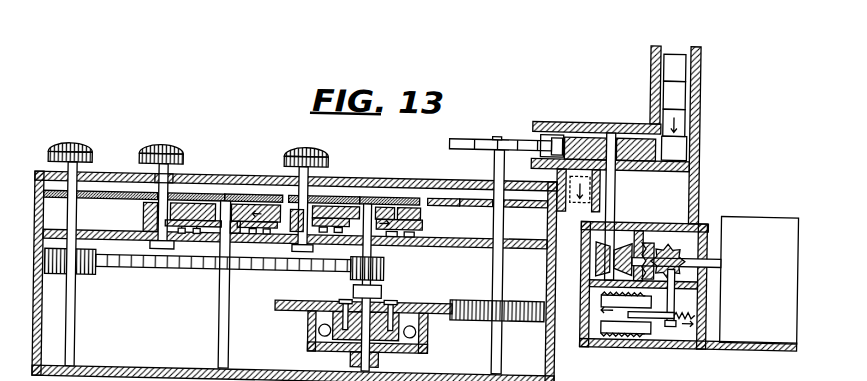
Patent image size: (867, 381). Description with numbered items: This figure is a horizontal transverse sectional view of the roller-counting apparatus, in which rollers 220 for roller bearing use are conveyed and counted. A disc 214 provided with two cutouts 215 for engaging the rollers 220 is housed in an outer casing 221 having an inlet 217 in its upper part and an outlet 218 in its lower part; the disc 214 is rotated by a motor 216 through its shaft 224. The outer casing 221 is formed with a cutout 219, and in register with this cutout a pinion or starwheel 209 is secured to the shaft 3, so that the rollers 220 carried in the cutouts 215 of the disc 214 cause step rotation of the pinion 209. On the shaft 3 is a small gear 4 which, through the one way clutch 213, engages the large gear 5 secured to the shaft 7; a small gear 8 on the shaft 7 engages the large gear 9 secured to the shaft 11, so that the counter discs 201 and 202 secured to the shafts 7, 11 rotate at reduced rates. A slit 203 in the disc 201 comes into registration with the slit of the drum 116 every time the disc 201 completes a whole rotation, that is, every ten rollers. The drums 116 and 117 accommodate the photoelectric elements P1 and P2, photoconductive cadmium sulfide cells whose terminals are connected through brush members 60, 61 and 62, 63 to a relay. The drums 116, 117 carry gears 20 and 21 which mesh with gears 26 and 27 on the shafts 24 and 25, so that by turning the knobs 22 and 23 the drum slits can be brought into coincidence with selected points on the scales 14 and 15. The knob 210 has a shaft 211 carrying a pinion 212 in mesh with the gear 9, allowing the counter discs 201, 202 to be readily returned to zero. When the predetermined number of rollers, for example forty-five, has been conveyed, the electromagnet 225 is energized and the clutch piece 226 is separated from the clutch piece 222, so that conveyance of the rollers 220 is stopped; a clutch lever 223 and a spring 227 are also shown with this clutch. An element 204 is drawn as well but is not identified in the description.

The shaft 3 is at (504, 280).
The gear of small diameter 4 is at (535, 291).
The gear of large diameter 5 is at (440, 295).
The shaft 7 is at (363, 247).
The gear of small diameter 8 is at (385, 262).
The gear of large diameter 9 is at (120, 266).
The shaft 11 is at (220, 311).
The scale 14 is at (461, 190).
The scale 15 is at (110, 190).
The gear 20 is at (425, 218).
The gear 21 is at (245, 236).
The knob 22 is at (318, 143).
The knob 23 is at (156, 143).
The shaft 24 is at (291, 142).
The shaft 25 is at (170, 172).
The gear 26 is at (289, 232).
The gear 27 is at (143, 214).
The brush member 60 is at (390, 230).
The brush member 61 is at (410, 230).
The brush member 62 is at (180, 231).
The brush member 63 is at (197, 231).
The drum 116 is at (433, 190).
The drum 117 is at (201, 204).
The counter disc 201 is at (333, 190).
The counter disc 202 is at (238, 190).
The slit 203 is at (398, 192).
The rack segment 204 is at (187, 190).
The pinion or starwheel 209 is at (462, 130).
The knob 210 is at (70, 143).
The shaft 211 is at (77, 225).
The pinion 212 is at (80, 273).
The one way clutch 213 is at (430, 322).
The disc 214 is at (588, 132).
The cutout 215 is at (686, 137).
The motor 216 is at (762, 190).
The inlet 217 is at (699, 60).
The outlet 218 is at (613, 180).
The cutout 219 is at (538, 128).
The roller 220 is at (673, 45).
The outer casing 221 is at (592, 111).
The clutch piece 222 is at (657, 226).
The clutch lever 223 is at (672, 312).
The shaft 224 is at (645, 230).
The electromagnet 225 is at (625, 326).
The clutch piece 226 is at (667, 230).
The spring 227 is at (691, 306).
The photoelectric element P1 is at (399, 212).
The photoelectric element P2 is at (256, 204).